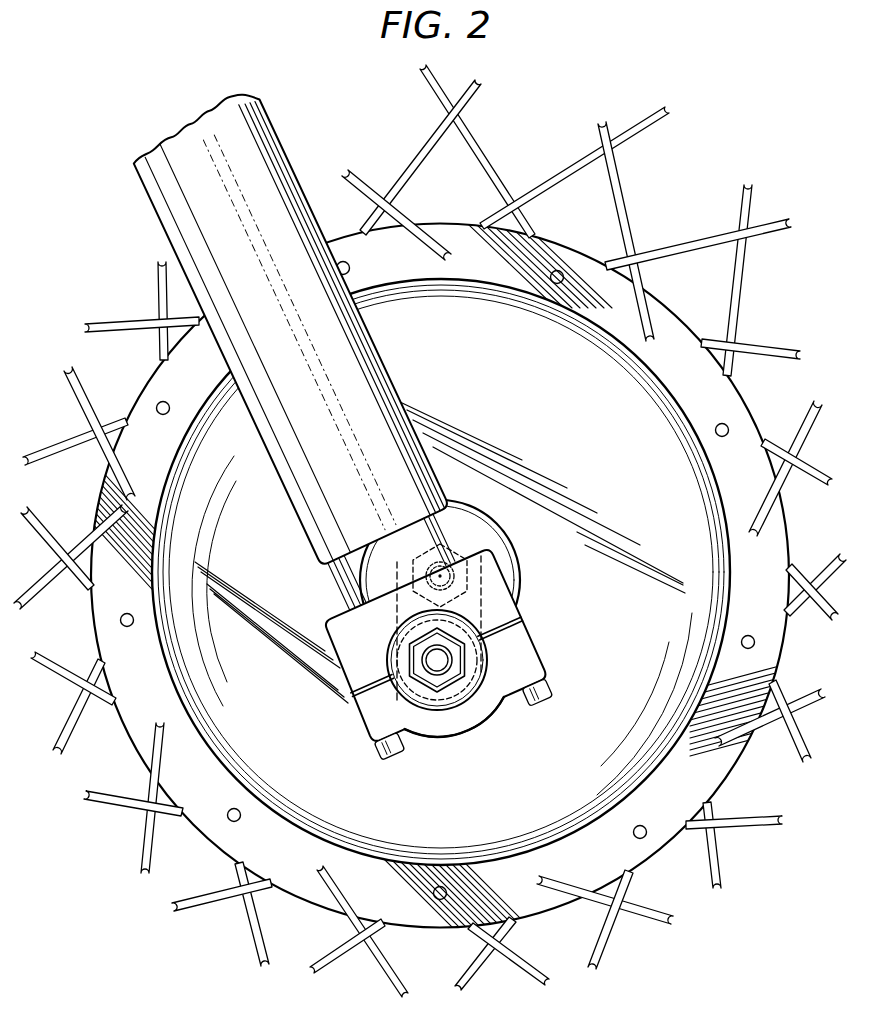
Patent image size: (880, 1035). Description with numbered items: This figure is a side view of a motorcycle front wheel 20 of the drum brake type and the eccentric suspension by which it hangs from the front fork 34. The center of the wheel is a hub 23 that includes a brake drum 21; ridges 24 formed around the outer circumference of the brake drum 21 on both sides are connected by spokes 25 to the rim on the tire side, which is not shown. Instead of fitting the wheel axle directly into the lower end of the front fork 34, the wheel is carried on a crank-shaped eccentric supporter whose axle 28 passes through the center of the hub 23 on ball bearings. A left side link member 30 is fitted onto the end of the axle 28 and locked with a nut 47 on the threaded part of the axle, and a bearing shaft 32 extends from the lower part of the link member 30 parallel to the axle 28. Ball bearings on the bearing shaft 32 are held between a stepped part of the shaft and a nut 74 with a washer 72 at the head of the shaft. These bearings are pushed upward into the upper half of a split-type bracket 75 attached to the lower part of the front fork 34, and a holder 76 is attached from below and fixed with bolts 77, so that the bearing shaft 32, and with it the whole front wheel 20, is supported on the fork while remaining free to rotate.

The front wheel 20 is at (650, 218).
The brake drum 21 is at (282, 812).
The hub 23 is at (557, 409).
The ridges 24 is at (563, 258).
The spokes 25 is at (737, 298).
The axle 28 is at (456, 576).
The left side link member 30 is at (397, 607).
The bearing shaft 32 is at (405, 660).
The front fork 34 is at (280, 167).
The nut 47 is at (410, 577).
The washer 72 is at (367, 713).
The nut 74 is at (458, 660).
The split-type bracket 75 is at (510, 608).
The holder 76 is at (472, 738).
The bolts 77 is at (400, 757).